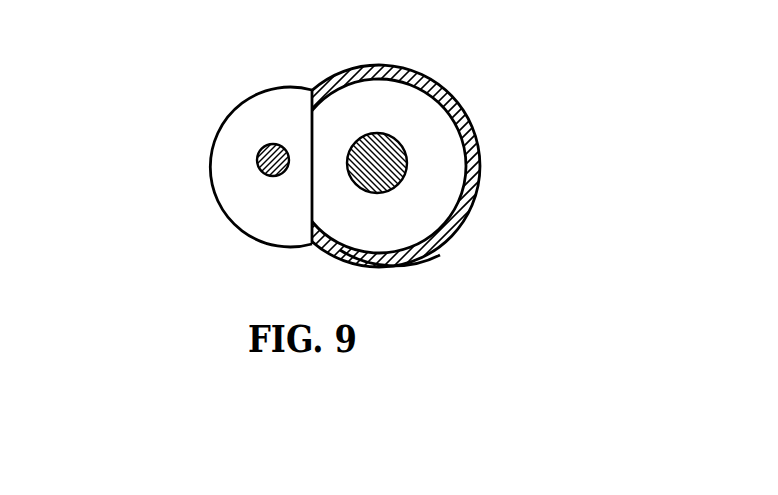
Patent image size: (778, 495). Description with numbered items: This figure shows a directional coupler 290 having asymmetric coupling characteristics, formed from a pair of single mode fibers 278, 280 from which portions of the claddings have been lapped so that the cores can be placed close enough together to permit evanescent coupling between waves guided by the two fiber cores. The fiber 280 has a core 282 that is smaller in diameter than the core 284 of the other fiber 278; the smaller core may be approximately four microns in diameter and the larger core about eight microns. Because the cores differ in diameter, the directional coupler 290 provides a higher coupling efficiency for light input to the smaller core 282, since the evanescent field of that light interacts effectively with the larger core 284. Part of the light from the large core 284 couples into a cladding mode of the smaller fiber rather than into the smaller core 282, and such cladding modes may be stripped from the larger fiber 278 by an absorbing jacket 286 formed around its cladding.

The directional coupler 290 is at (145, 167).
The single mode fiber 278 is at (474, 181).
The single mode fiber 280 is at (253, 241).
The core 282 is at (208, 160).
The core 284 is at (368, 134).
The absorbing jacket 286 is at (403, 268).